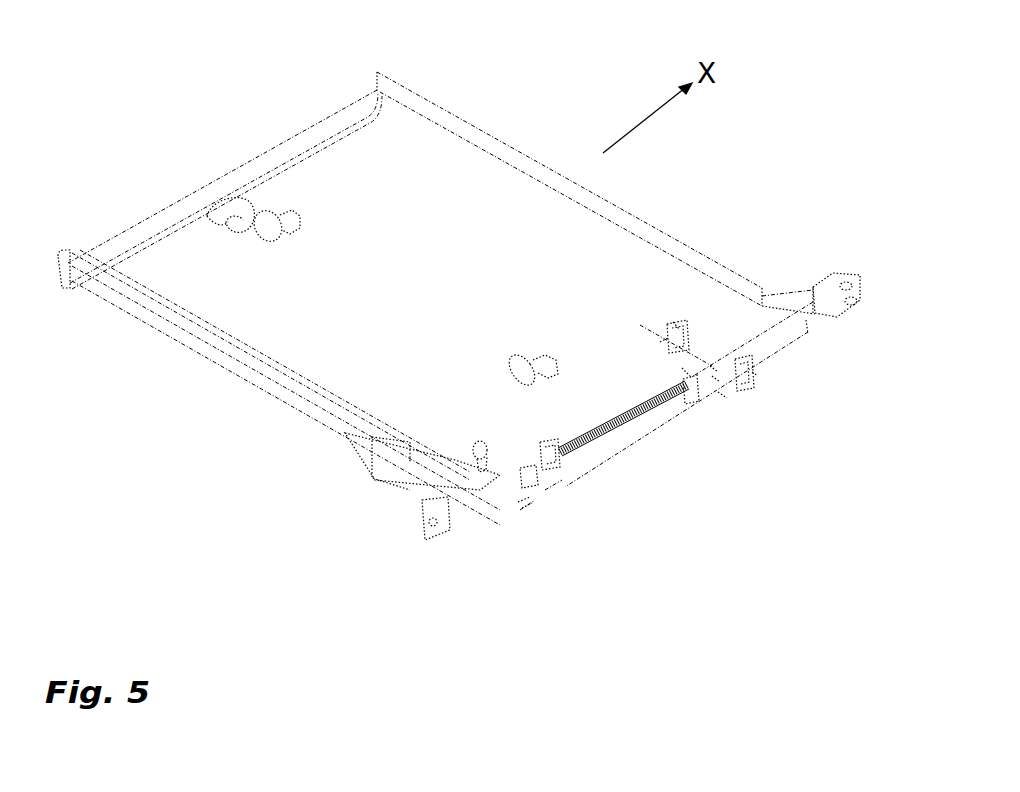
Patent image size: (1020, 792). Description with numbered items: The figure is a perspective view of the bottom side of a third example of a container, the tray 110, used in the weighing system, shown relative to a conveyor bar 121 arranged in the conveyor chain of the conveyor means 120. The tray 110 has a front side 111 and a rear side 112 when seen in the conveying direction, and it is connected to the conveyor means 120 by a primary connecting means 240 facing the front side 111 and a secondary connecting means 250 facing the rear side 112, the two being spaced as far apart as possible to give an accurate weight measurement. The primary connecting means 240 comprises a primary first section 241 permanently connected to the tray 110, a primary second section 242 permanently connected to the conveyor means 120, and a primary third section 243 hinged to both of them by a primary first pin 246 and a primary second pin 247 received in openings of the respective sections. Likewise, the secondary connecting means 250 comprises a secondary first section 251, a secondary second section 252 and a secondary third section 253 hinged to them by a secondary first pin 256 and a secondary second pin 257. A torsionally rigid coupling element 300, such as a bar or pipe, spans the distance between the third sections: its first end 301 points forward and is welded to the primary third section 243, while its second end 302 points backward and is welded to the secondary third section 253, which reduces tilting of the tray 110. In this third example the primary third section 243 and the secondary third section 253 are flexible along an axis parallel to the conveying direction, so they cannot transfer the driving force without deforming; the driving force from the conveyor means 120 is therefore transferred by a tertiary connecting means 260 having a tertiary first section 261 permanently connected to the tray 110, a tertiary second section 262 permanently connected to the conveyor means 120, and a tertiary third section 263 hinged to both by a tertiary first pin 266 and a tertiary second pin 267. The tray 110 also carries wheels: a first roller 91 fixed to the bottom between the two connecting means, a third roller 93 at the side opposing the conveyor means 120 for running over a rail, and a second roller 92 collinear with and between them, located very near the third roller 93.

The first roller 91 is at (517, 376).
The second roller 92 is at (270, 220).
The third roller 93 is at (214, 222).
The tray 110 is at (452, 160).
The front side 111 is at (532, 168).
The rear side 112 is at (77, 258).
The conveyor means 120 is at (727, 312).
The conveyor bar 121 is at (800, 312).
The primary connecting means 240 is at (704, 354).
The primary first section 241 is at (673, 320).
The primary second section 242 is at (762, 352).
The primary third section 243 is at (715, 367).
The primary first pin 246 is at (686, 383).
The primary second pin 247 is at (762, 352).
The secondary connecting means 250 is at (500, 468).
The secondary first section 251 is at (485, 453).
The secondary second section 252 is at (523, 507).
The secondary third section 253 is at (512, 482).
The secondary first pin 256 is at (488, 460).
The secondary second pin 257 is at (561, 595).
The tertiary connecting means 260 is at (622, 440).
The tertiary first section 261 is at (557, 447).
The tertiary second section 262 is at (660, 346).
The tertiary third section 263 is at (673, 330).
The tertiary first pin 266 is at (525, 506).
The tertiary second pin 267 is at (716, 378).
The coupling element 300 is at (687, 372).
The first end 301 is at (723, 396).
The second end 302 is at (553, 493).